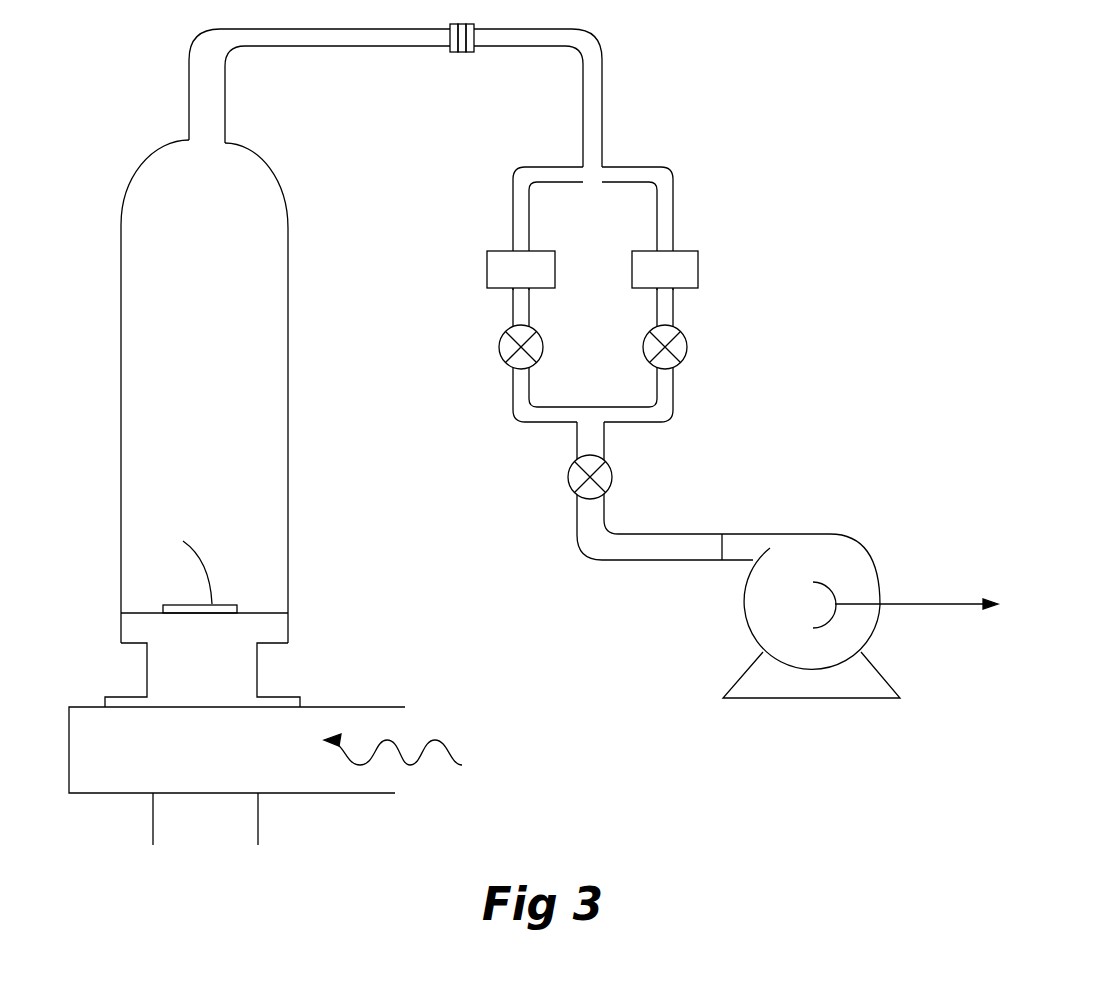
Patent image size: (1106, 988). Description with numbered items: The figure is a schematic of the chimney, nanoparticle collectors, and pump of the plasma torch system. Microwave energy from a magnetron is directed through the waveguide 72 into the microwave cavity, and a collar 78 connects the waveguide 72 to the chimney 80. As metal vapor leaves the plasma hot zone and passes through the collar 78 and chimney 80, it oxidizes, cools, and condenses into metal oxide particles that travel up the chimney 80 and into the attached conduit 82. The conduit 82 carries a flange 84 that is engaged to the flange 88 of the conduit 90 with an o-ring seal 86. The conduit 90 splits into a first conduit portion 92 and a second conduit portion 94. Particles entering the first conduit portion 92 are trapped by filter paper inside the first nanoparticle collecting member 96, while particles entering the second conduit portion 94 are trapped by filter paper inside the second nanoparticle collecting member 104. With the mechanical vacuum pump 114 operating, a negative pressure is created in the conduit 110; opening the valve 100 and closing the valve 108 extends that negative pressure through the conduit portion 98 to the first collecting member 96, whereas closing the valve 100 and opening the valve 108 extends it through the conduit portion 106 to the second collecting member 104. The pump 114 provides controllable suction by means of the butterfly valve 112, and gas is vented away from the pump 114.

The waveguide 72 is at (386, 794).
The collar 78 is at (288, 627).
The chimney 80 is at (120, 357).
The conduit 82 is at (338, 48).
The flange 84 is at (452, 55).
The o-ring seal 86 is at (461, 55).
The flange 88 is at (471, 55).
The conduit 90 is at (603, 81).
The first conduit portion 92 is at (513, 213).
The second conduit portion 94 is at (673, 203).
The first nanoparticle collecting member 96 is at (487, 273).
The conduit portion 98 is at (513, 313).
The valve 100 is at (499, 360).
The second nanoparticle collecting member 104 is at (699, 268).
The conduit portion 106 is at (673, 304).
The valve 108 is at (687, 350).
The conduit 110 is at (585, 550).
The butterfly valve 112 is at (612, 477).
The mechanical vacuum pump 114 is at (838, 535).